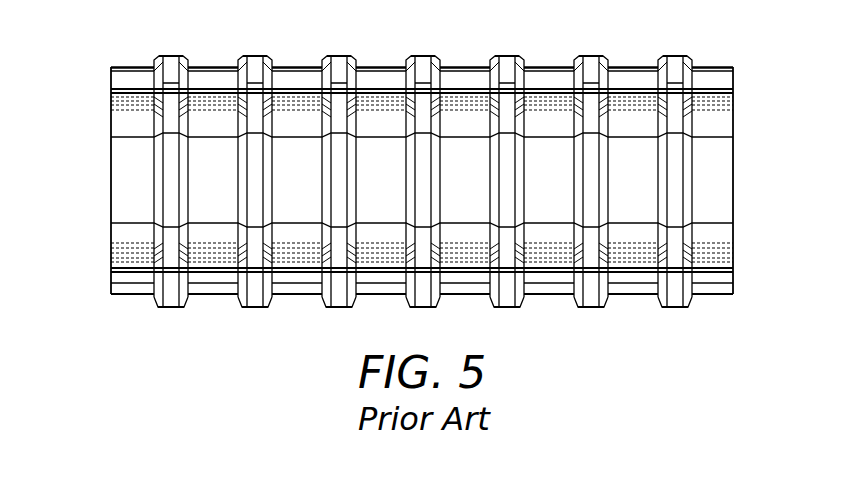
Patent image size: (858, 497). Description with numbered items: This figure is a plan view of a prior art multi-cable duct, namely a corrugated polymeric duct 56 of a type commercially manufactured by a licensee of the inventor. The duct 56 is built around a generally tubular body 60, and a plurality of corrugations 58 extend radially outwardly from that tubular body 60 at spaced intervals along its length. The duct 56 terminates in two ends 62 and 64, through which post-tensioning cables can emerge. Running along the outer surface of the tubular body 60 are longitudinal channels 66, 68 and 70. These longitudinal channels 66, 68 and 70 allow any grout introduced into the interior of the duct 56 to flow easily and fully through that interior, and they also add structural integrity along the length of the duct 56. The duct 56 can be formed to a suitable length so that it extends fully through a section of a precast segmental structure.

The corrugated polymeric duct 56 is at (545, 72).
The corrugations 58 is at (335, 55).
The tubular body 60 is at (547, 293).
The end 62 is at (110, 200).
The end 64 is at (733, 200).
The longitudinal channel 66 is at (140, 92).
The longitudinal channel 68 is at (708, 273).
The longitudinal channel 70 is at (298, 70).